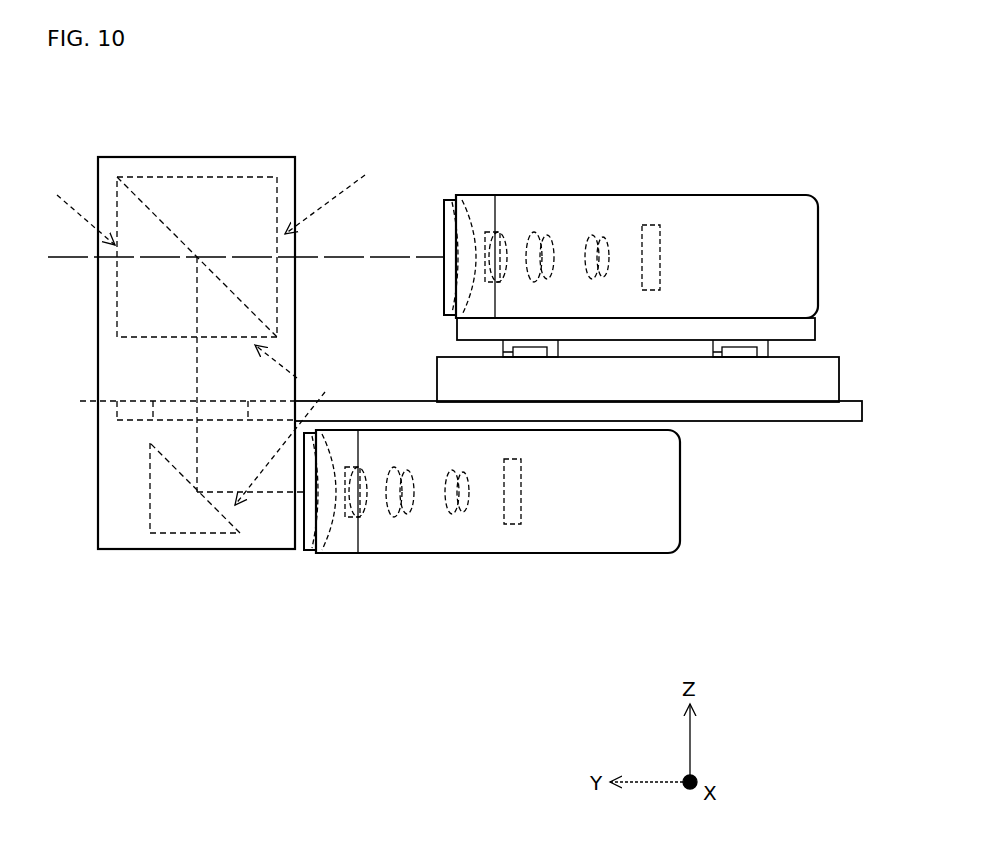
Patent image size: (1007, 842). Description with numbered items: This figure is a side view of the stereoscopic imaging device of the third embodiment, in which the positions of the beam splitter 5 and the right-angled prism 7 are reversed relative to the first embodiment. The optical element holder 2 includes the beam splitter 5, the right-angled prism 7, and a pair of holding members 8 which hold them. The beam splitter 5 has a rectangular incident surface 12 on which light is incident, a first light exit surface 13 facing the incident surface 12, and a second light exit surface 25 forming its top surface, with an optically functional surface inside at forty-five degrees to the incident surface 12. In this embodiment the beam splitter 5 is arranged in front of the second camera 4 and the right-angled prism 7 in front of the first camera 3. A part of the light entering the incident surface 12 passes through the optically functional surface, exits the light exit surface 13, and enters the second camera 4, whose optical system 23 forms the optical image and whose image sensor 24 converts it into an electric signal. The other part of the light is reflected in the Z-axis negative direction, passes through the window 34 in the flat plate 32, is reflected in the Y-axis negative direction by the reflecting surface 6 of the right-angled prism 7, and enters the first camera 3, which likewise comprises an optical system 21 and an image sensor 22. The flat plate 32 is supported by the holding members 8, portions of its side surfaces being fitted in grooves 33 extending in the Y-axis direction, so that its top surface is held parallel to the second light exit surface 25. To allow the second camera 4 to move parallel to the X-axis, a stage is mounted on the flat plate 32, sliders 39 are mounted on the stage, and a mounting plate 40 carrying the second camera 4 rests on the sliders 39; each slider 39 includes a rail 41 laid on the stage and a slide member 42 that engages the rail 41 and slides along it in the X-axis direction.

The optical element holder 2 is at (118, 550).
The first camera 3 is at (640, 540).
The second camera 4 is at (752, 205).
The beam splitter 5 is at (167, 177).
The reflecting surface 6 is at (288, 437).
The right-angled prism 7 is at (193, 540).
The holding members 8 is at (250, 168).
The incident surface 12 is at (69, 207).
The first light exit surface 13 is at (340, 192).
The optical system 21 is at (463, 553).
The image sensor 22 is at (508, 524).
The optical system 23 is at (605, 193).
The image sensor 24 is at (645, 228).
The second light exit surface 25 is at (288, 374).
The flat plate 32 is at (797, 421).
The groove 33 is at (169, 402).
The window 34 is at (162, 400).
The sliders 39 is at (397, 318).
The mounting plate 40 is at (818, 318).
The rail 41 is at (505, 352).
The slide member 42 is at (527, 347).